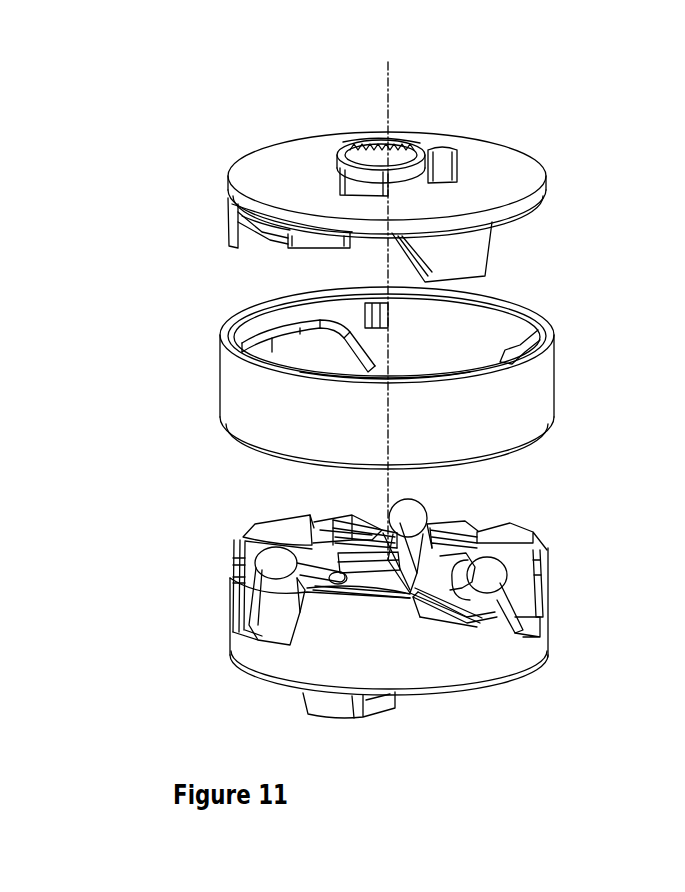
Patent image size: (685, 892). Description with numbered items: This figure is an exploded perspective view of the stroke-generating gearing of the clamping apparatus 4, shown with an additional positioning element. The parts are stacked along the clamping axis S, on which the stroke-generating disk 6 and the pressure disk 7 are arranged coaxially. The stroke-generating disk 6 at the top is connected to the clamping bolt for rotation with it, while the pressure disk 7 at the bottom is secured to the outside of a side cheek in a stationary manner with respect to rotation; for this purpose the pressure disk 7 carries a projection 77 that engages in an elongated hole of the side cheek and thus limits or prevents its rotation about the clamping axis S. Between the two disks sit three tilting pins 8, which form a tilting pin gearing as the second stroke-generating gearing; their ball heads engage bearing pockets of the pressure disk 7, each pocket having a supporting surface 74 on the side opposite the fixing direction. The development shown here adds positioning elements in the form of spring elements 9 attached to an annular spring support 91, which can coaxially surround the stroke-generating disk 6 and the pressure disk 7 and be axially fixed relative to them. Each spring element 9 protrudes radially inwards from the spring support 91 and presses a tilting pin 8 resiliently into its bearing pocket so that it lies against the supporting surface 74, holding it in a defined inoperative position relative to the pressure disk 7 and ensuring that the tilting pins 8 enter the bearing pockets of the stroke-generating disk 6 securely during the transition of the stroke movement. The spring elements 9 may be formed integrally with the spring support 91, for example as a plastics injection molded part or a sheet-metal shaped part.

The clamping apparatus 4 is at (611, 149).
The clamping axis S is at (390, 101).
The stroke-generating disk 6 is at (278, 172).
The spring element 9 is at (262, 323).
The spring support 91 is at (527, 405).
The pressure disk 7 is at (322, 638).
The projection 77 is at (347, 703).
The tilting pin 8 is at (410, 515).
The supporting surface 74 is at (257, 605).